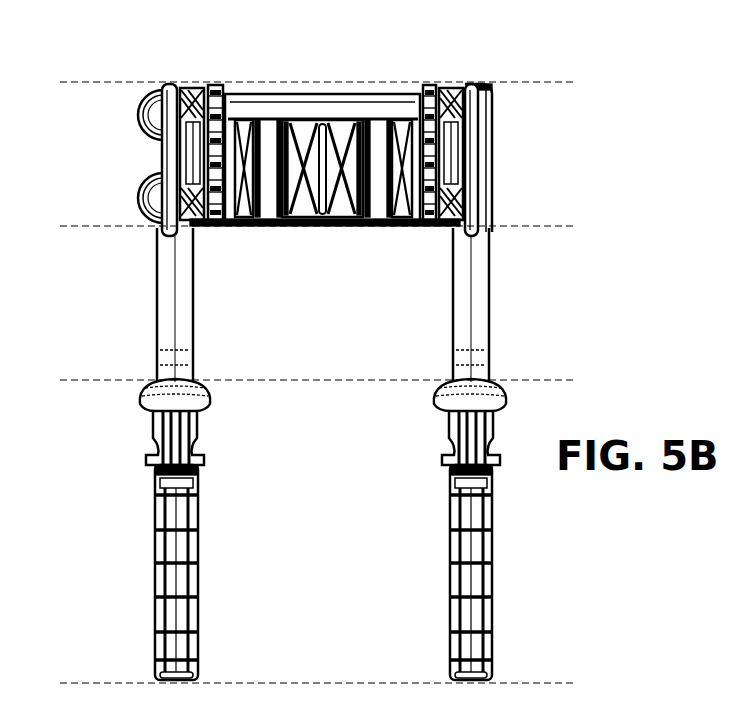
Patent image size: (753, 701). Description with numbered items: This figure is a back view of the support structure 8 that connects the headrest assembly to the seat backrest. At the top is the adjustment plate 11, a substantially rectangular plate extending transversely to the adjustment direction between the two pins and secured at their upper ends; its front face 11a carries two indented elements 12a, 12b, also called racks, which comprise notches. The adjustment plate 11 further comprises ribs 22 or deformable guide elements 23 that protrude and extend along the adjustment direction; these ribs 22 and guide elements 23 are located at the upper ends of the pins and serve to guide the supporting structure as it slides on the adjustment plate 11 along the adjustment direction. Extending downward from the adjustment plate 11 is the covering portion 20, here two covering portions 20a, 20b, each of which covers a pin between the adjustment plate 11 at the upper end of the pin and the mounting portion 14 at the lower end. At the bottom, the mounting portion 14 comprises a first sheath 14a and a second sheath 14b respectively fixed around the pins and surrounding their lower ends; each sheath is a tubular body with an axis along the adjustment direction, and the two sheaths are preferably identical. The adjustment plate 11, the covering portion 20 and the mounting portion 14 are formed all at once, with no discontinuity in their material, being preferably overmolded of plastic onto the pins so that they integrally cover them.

The support structure 8 is at (604, 122).
The adjustment plate 11 is at (66, 82).
The front face 11a is at (327, 115).
The indented element 12a is at (213, 86).
The indented element 12b is at (437, 86).
The mounting portion 14 is at (66, 385).
The first sheath 14a is at (163, 552).
The second sheath 14b is at (482, 552).
The covering portion 20 is at (66, 230).
The covering portion 20a is at (165, 298).
The covering portion 20b is at (480, 298).
The rib 22 is at (172, 150).
The deformable guide element 23 is at (147, 112).